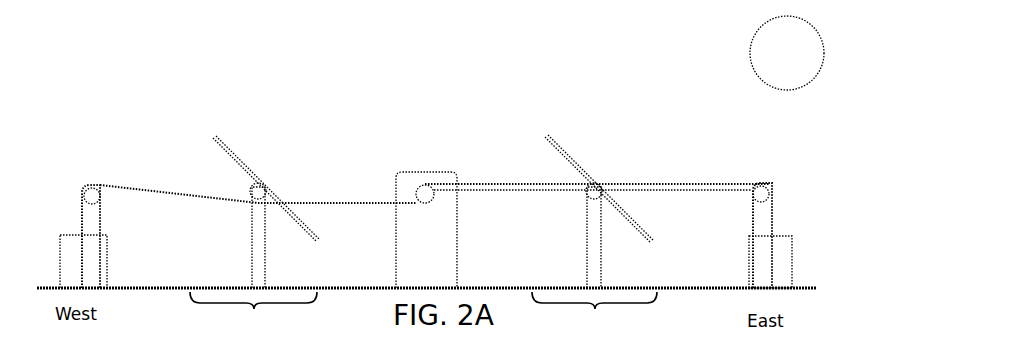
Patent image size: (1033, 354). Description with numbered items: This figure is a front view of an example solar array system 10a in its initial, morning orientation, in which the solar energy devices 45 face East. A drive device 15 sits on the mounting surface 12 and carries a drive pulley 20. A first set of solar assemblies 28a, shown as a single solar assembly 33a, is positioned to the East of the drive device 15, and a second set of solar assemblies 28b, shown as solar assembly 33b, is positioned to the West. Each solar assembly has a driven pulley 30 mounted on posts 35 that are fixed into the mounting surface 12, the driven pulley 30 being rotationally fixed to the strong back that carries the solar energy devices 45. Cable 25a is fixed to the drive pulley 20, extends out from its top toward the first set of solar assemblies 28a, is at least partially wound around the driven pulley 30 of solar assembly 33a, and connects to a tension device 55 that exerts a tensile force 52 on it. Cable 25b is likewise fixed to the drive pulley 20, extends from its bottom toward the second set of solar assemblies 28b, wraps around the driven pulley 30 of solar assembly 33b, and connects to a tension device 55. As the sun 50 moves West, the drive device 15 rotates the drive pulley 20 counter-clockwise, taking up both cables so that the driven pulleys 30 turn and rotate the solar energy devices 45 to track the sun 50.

The solar array system 10a is at (516, 63).
The mounting surface 12 is at (170, 284).
The drive device 15 is at (413, 172).
The drive pulley 20 is at (432, 198).
The cable 25a is at (508, 186).
The cable 25b is at (348, 203).
The first set of solar assemblies 28a is at (594, 318).
The second set of solar assemblies 28b is at (253, 318).
The driven pulley 30 is at (250, 197).
The solar assembly 33a is at (666, 196).
The solar assembly 33b is at (330, 213).
The posts 35 is at (258, 250).
The solar energy devices 45 is at (219, 138).
The sun 50 is at (773, 90).
The tensile force 52 is at (124, 175).
The tension device 55 is at (72, 234).